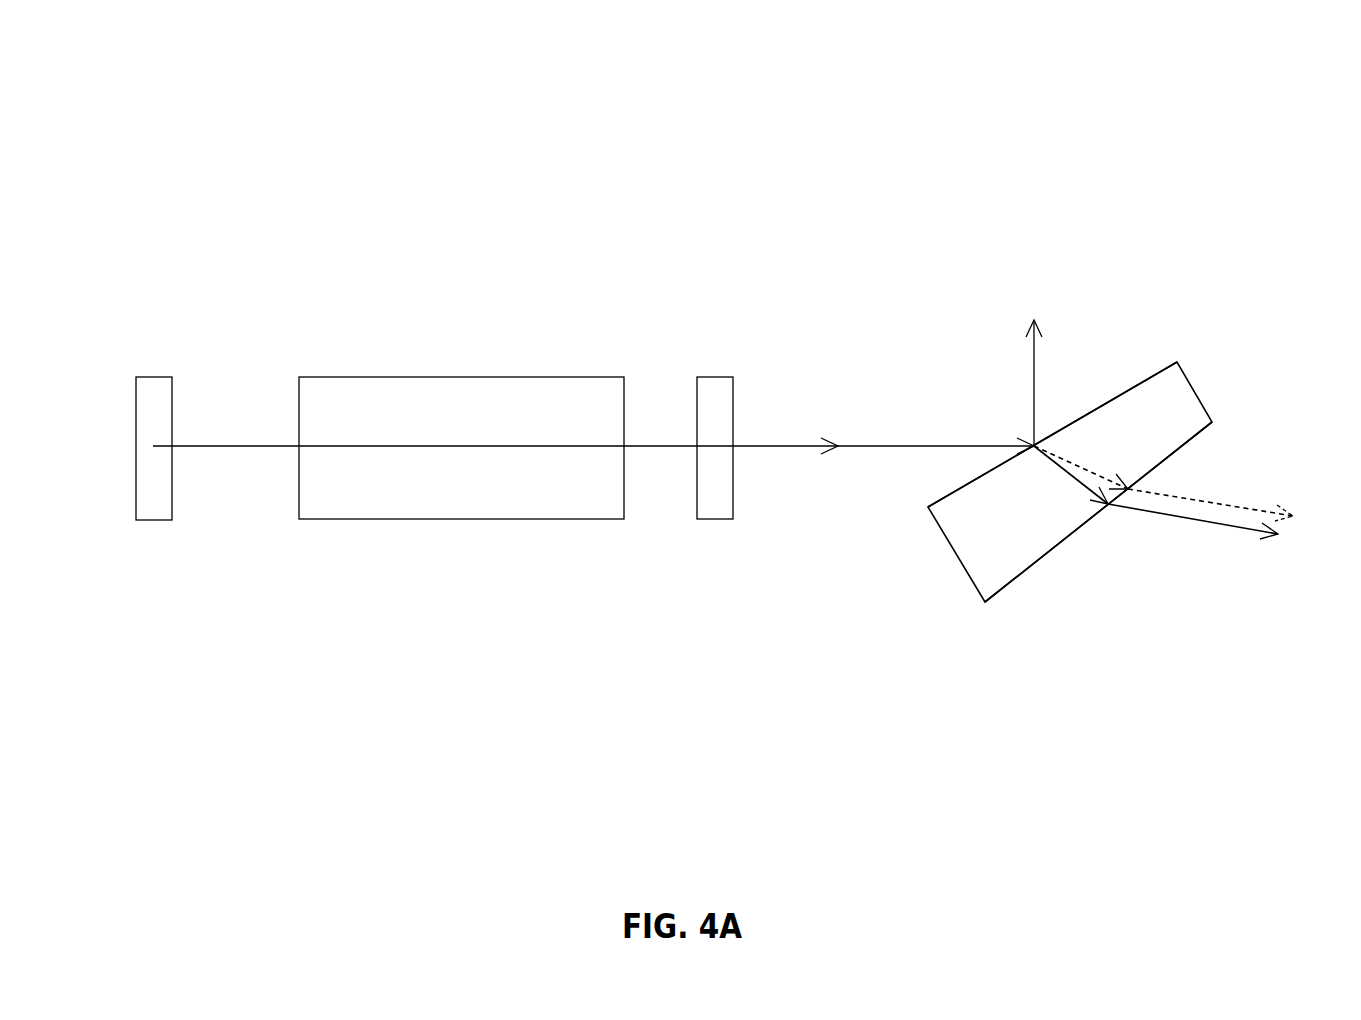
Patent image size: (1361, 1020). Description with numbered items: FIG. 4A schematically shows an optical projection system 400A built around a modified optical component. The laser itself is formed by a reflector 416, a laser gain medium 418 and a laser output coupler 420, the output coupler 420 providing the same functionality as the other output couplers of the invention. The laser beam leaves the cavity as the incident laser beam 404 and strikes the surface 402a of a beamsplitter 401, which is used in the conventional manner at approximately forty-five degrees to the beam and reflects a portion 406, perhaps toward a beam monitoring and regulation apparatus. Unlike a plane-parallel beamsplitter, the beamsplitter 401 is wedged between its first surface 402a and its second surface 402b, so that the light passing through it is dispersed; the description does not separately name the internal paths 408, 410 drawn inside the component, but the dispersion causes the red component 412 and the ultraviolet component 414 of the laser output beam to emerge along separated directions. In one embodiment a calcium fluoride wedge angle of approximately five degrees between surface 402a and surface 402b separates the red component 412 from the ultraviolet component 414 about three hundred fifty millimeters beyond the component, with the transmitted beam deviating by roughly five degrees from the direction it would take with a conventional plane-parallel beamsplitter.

The system 400A is at (729, 323).
The beamsplitter 401 is at (1070, 482).
The surface 402a is at (1052, 405).
The surface 402b is at (1098, 518).
The incident laser beam 404 is at (593, 416).
The reflected portion 406 is at (988, 383).
The refracted beam (extraordinary) 408 is at (1096, 454).
The refracted beam (ordinary) 410 is at (1067, 493).
The red component 412 is at (1225, 488).
The ultraviolet component 414 is at (1208, 545).
The reflector 416 is at (178, 477).
The laser gain medium 418 is at (461, 414).
The laser output coupler 420 is at (683, 414).